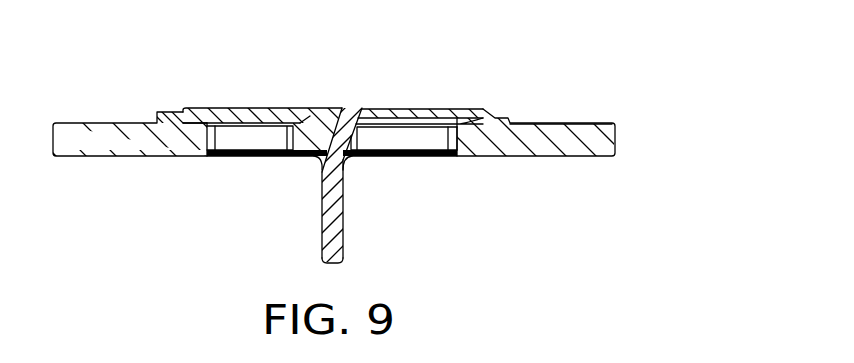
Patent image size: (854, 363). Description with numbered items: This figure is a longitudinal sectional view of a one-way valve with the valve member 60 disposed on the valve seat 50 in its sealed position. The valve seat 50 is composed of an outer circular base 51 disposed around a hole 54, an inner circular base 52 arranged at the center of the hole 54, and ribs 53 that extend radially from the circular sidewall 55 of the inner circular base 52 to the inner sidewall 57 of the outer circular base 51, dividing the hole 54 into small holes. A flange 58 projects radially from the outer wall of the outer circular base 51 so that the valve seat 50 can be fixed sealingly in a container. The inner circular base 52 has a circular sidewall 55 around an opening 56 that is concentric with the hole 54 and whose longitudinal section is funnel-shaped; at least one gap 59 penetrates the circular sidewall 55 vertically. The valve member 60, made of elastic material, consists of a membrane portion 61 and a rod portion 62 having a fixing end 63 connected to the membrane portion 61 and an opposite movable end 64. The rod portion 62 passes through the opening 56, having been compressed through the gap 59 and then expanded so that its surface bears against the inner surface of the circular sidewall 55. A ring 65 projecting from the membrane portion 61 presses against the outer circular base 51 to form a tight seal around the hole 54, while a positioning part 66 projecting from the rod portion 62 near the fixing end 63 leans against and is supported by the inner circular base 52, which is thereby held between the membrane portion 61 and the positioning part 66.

The valve seat 50 is at (618, 124).
The outer circular base 51 is at (473, 132).
The inner circular base 52 is at (213, 79).
The ribs 53 is at (230, 137).
The hole 54 is at (408, 151).
The circular sidewall 55 is at (267, 113).
The opening 56 is at (280, 157).
The inner sidewall 57 is at (208, 158).
The flange 58 is at (570, 124).
The gap 59 is at (355, 160).
The valve member 60 is at (361, 104).
The membrane portion 61 is at (287, 113).
The rod portion 62 is at (332, 219).
The fixing end 63 is at (337, 123).
The movable end 64 is at (332, 256).
The ring 65 is at (470, 119).
The positioning part 66 is at (318, 166).